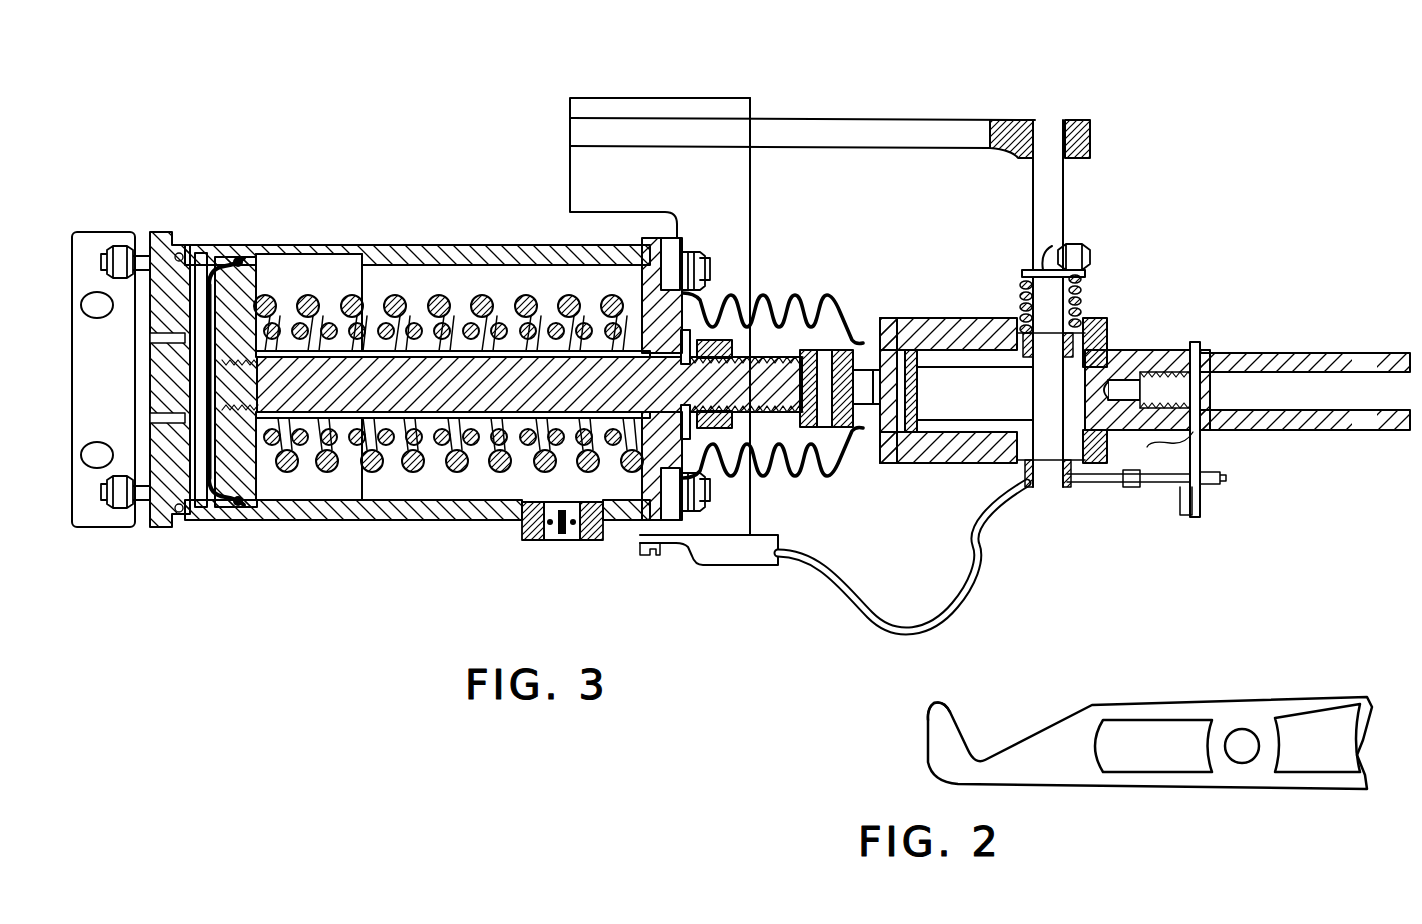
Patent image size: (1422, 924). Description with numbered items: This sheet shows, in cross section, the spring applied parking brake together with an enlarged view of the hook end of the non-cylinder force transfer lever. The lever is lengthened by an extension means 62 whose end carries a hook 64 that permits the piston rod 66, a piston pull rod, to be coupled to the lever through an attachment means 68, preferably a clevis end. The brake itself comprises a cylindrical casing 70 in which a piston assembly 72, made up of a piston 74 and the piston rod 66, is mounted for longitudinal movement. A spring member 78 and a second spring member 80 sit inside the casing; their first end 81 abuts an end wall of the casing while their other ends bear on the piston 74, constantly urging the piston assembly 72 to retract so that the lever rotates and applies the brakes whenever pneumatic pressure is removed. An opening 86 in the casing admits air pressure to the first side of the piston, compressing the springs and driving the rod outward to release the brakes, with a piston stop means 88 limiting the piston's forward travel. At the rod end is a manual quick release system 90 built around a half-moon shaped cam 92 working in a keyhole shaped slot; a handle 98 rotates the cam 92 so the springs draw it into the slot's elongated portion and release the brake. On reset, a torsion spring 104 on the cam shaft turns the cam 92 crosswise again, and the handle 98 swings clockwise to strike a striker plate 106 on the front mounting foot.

In FIG. 2, the extension means 62 is at (1197, 708).
In FIG. 2, the hook 64 is at (945, 717).
In FIG. 3, the piston rod 66 is at (322, 362).
In FIG. 3, the attachment means 68 is at (1262, 353).
In FIG. 3, the cylindrical casing 70 is at (522, 245).
In FIG. 3, the piston assembly 72 is at (281, 484).
In FIG. 3, the piston 74 is at (258, 292).
In FIG. 3, the spring member 78 is at (390, 300).
In FIG. 3, the second spring member 80 is at (455, 350).
In FIG. 3, the first end 81 is at (658, 490).
In FIG. 3, the opening 86 is at (150, 380).
In FIG. 3, the piston stop means 88 is at (352, 484).
In FIG. 3, the manual quick release system 90 is at (1125, 100).
In FIG. 3, the half-moon shaped cam 92 is at (1050, 445).
In FIG. 3, the handle 98 is at (921, 118).
In FIG. 3, the torsion spring 104 is at (1083, 293).
In FIG. 3, the striker plate 106 is at (600, 98).